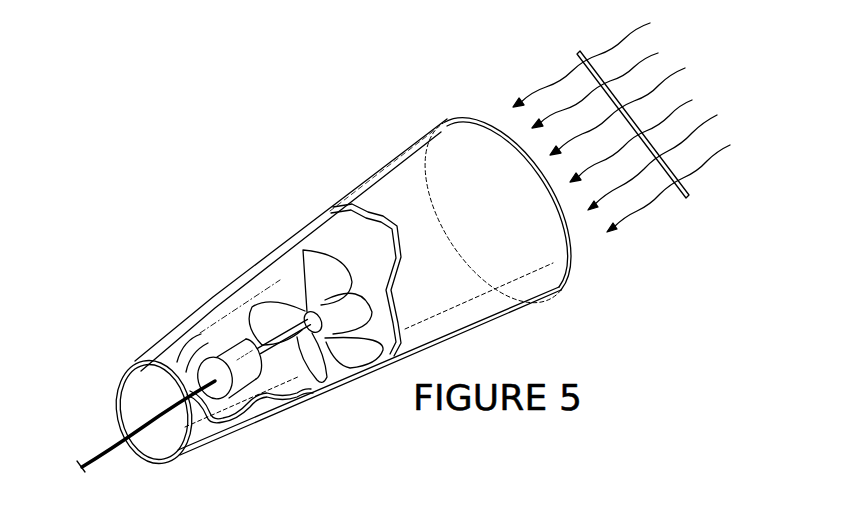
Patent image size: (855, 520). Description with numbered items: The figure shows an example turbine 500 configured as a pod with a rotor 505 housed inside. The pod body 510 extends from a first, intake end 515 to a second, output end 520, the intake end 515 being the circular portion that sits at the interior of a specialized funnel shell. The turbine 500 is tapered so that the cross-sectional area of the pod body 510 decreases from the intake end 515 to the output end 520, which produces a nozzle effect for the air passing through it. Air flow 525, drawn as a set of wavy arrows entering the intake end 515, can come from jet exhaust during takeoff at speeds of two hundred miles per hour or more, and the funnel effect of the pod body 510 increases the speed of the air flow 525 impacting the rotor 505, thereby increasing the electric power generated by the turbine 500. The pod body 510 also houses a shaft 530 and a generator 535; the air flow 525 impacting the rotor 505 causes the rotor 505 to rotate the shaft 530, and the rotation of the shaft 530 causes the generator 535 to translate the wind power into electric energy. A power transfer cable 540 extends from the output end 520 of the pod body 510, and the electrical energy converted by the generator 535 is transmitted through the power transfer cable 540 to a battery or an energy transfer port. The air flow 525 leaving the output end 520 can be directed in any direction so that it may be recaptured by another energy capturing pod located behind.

The turbine 500 is at (276, 197).
The rotor 505 is at (332, 277).
The pod body 510 is at (392, 182).
The intake end 515 is at (574, 258).
The output end 520 is at (156, 456).
The air flow 525 is at (687, 197).
The shaft 530 is at (236, 300).
The generator 535 is at (172, 340).
The power transfer cable 540 is at (110, 447).